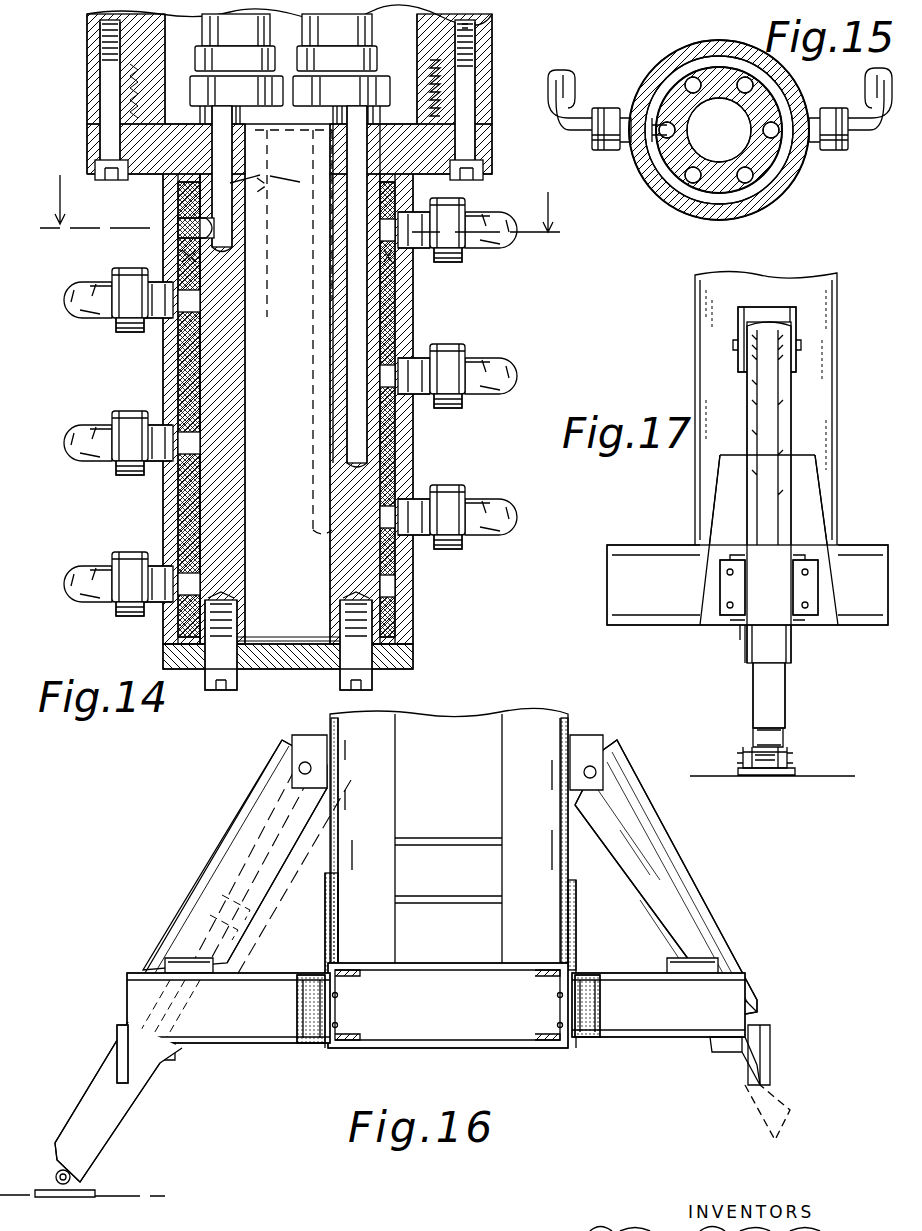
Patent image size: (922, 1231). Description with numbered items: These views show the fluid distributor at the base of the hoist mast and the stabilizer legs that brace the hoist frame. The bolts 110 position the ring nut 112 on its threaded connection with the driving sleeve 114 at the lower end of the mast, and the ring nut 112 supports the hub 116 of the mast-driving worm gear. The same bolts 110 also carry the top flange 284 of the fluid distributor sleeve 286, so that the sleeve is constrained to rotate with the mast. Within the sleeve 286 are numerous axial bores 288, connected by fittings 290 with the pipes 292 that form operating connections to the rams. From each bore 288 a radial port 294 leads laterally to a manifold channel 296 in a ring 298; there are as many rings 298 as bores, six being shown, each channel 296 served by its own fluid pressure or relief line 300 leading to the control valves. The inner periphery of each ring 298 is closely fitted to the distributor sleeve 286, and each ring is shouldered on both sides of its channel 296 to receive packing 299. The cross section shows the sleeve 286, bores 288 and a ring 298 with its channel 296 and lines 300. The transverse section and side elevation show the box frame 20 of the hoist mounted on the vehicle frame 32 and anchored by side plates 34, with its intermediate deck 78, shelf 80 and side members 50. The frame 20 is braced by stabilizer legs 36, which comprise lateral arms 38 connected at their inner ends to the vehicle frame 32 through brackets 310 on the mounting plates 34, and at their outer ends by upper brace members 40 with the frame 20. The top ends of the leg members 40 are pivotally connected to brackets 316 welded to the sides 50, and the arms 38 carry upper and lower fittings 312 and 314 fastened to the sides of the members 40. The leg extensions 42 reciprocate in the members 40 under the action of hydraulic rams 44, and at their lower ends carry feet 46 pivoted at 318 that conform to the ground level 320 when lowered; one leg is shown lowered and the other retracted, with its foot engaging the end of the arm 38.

In FIG. 17, the box frame 20 is at (828, 305).
In FIG. 16, the box frame 20 is at (525, 720).
In FIG. 17, the vehicle frame 32 is at (858, 555).
In FIG. 16, the vehicle frame 32 is at (355, 1043).
In FIG. 17, the side plates 34 is at (812, 520).
In FIG. 16, the side plates 34 is at (325, 913).
In FIG. 17, the stabilizer legs 36 is at (795, 678).
In FIG. 16, the stabilizer legs 36 is at (136, 946).
In FIG. 17, the lateral arms 38 is at (742, 630).
In FIG. 16, the lateral arms 38 is at (268, 1040).
In FIG. 17, the brace members 40 is at (791, 440).
In FIG. 16, the brace members 40 is at (210, 876).
In FIG. 17, the legs 42 is at (762, 712).
In FIG. 16, the legs 42 is at (118, 1108).
In FIG. 16, the hydraulic rams 44 is at (222, 895).
In FIG. 17, the feet 46 is at (792, 771).
In FIG. 16, the feet 46 is at (90, 1190).
In FIG. 17, the side members 50 is at (813, 387).
In FIG. 16, the side members 50 is at (552, 757).
In FIG. 16, the intermediate deck 78 is at (436, 838).
In FIG. 16, the shelf 80 is at (455, 896).
In FIG. 14, the bolts 110 is at (100, 104).
In FIG. 14, the ring nut 112 is at (470, 100).
In FIG. 14, the driving sleeve 114 is at (440, 60).
In FIG. 14, the hub 116 is at (475, 28).
In FIG. 14, the top flange 284 is at (455, 172).
In FIG. 14, the fluid distributor sleeve 286 is at (380, 570).
In FIG. 15, the fluid distributor sleeve 286 is at (712, 185).
In FIG. 14, the axial bores 288 is at (350, 160).
In FIG. 15, the axial bores 288 is at (690, 84).
In FIG. 14, the fittings 290 is at (305, 125).
In FIG. 14, the pipes 292 is at (270, 35).
In FIG. 14, the radial port 294 is at (200, 228).
In FIG. 15, the radial port 294 is at (668, 135).
In FIG. 14, the manifold channel 296 is at (178, 228).
In FIG. 15, the manifold channel 296 is at (668, 168).
In FIG. 14, the rings 298 is at (178, 257).
In FIG. 15, the rings 298 is at (765, 215).
In FIG. 14, the packing 299 is at (380, 258).
In FIG. 14, the fluid pressure or relief line 300 is at (72, 443).
In FIG. 15, the fluid pressure or relief line 300 is at (568, 112).
In FIG. 17, the brackets 310 is at (726, 582).
In FIG. 16, the brackets 310 is at (315, 1043).
In FIG. 16, the upper fitting 312 is at (165, 963).
In FIG. 16, the lower fitting 314 is at (170, 1060).
In FIG. 17, the brackets 316 is at (796, 325).
In FIG. 16, the brackets 316 is at (300, 735).
In FIG. 17, the pivot 318 is at (787, 757).
In FIG. 16, the pivot 318 is at (55, 1175).
In FIG. 16, the ground level 320 is at (120, 1198).